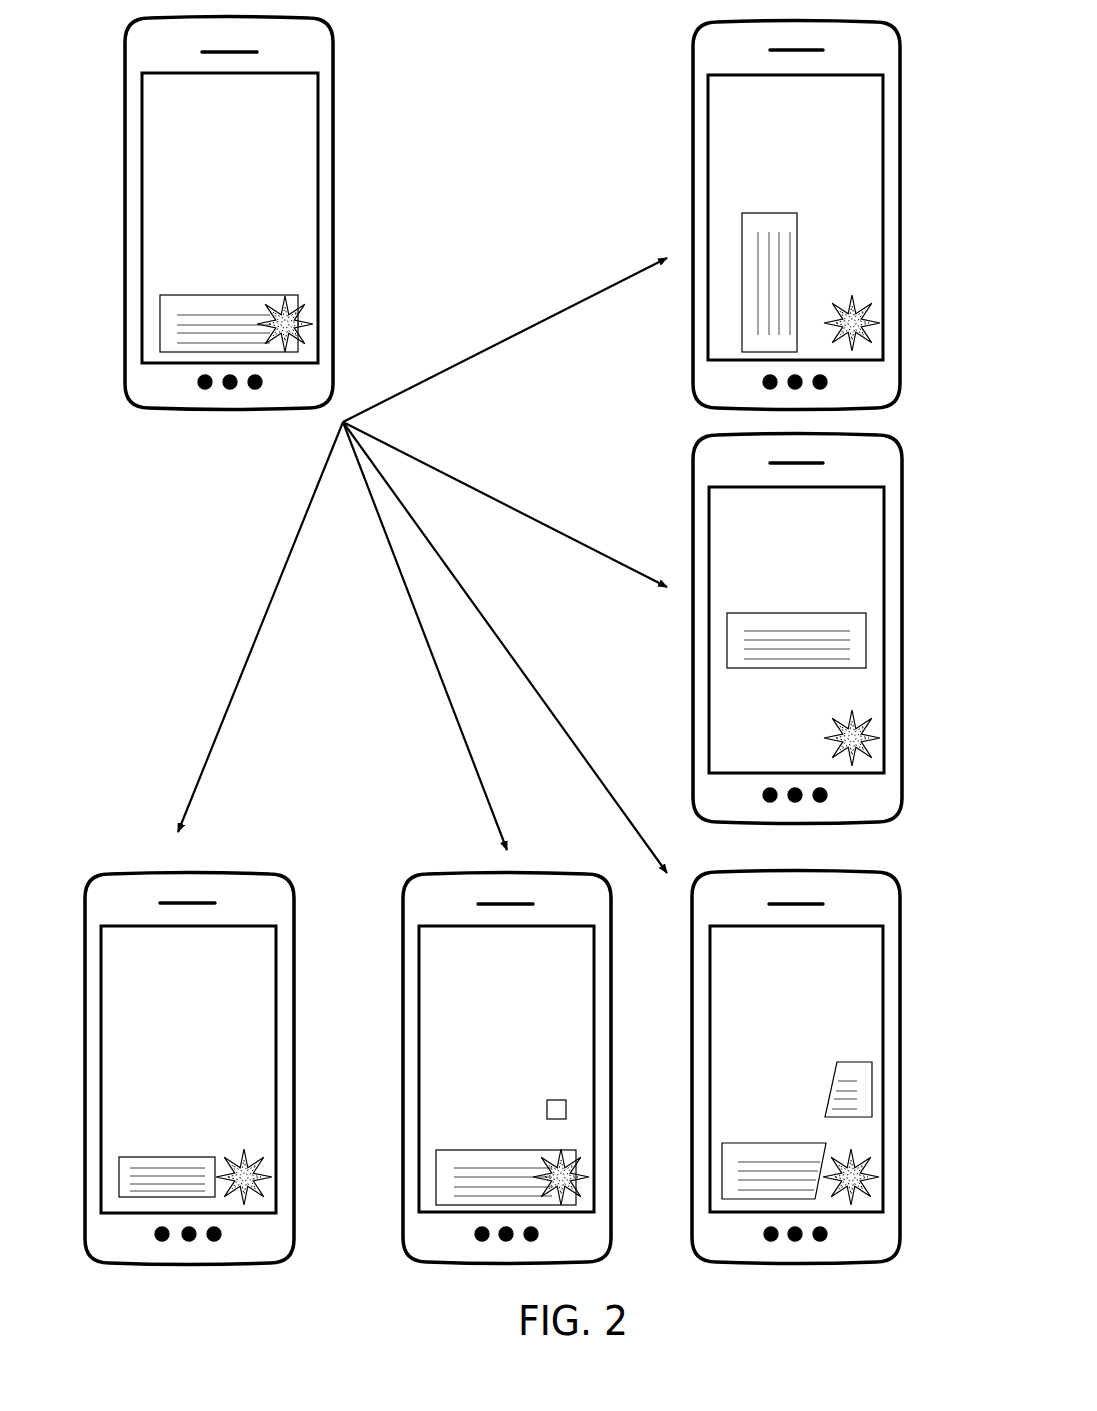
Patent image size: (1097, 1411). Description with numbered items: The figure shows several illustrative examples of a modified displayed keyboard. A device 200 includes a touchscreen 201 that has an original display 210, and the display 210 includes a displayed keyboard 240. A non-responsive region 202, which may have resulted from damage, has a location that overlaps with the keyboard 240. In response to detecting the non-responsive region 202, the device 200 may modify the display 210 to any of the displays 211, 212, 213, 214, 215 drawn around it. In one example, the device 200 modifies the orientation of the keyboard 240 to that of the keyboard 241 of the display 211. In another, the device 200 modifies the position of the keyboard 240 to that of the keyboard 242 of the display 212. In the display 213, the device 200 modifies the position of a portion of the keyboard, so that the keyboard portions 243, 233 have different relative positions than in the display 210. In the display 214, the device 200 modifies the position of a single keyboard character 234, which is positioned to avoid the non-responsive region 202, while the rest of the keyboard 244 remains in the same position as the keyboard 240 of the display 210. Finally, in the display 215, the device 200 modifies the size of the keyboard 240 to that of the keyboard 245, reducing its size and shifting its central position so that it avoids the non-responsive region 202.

The device 200 is at (355, 101).
The touchscreen 201 is at (268, 236).
The non-responsive region 202 is at (297, 322).
The original display 210 is at (229, 213).
The display 211 is at (796, 215).
The display 212 is at (797, 629).
The display 213 is at (796, 1067).
The display 214 is at (507, 1068).
The display 215 is at (189, 1069).
The keyboard portion 233 is at (862, 1085).
The keyboard character 234 is at (547, 1108).
The displayed keyboard 240 is at (220, 332).
The keyboard 241 is at (758, 333).
The keyboard 242 is at (848, 649).
The keyboard portion 243 is at (759, 1177).
The keyboard 244 is at (459, 1177).
The keyboard 245 is at (131, 1189).